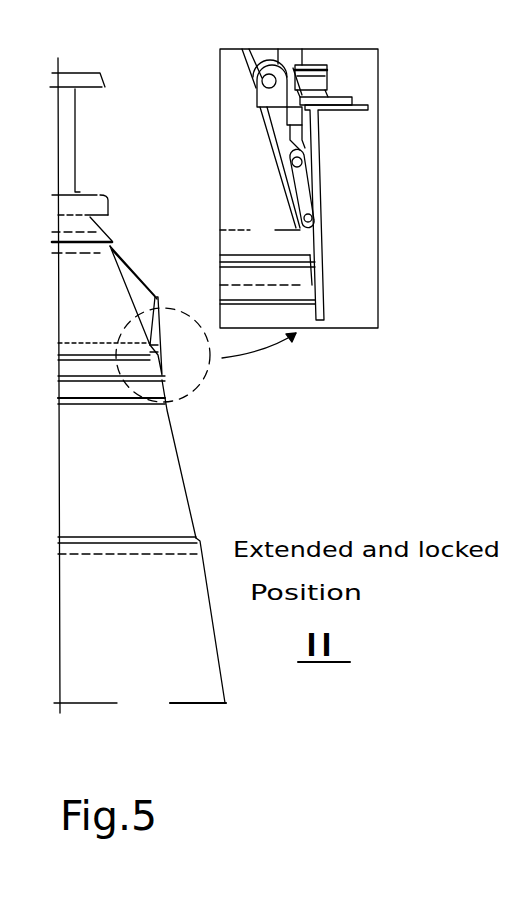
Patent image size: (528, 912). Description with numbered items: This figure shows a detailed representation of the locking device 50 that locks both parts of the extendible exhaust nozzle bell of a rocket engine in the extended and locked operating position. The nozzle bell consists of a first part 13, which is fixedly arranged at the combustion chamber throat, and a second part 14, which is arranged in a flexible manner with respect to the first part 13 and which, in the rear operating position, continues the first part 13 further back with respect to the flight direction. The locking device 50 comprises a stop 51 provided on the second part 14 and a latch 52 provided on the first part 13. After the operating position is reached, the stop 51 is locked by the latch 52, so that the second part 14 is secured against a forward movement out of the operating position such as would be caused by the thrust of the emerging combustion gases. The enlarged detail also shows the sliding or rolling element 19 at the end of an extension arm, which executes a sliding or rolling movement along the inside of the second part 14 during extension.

The first part 13 is at (102, 299).
The second part 14 is at (128, 524).
The locking device 50 is at (182, 375).
The stop 51 is at (328, 112).
The latch 52 is at (337, 97).
The sliding or rolling element 19 is at (300, 198).